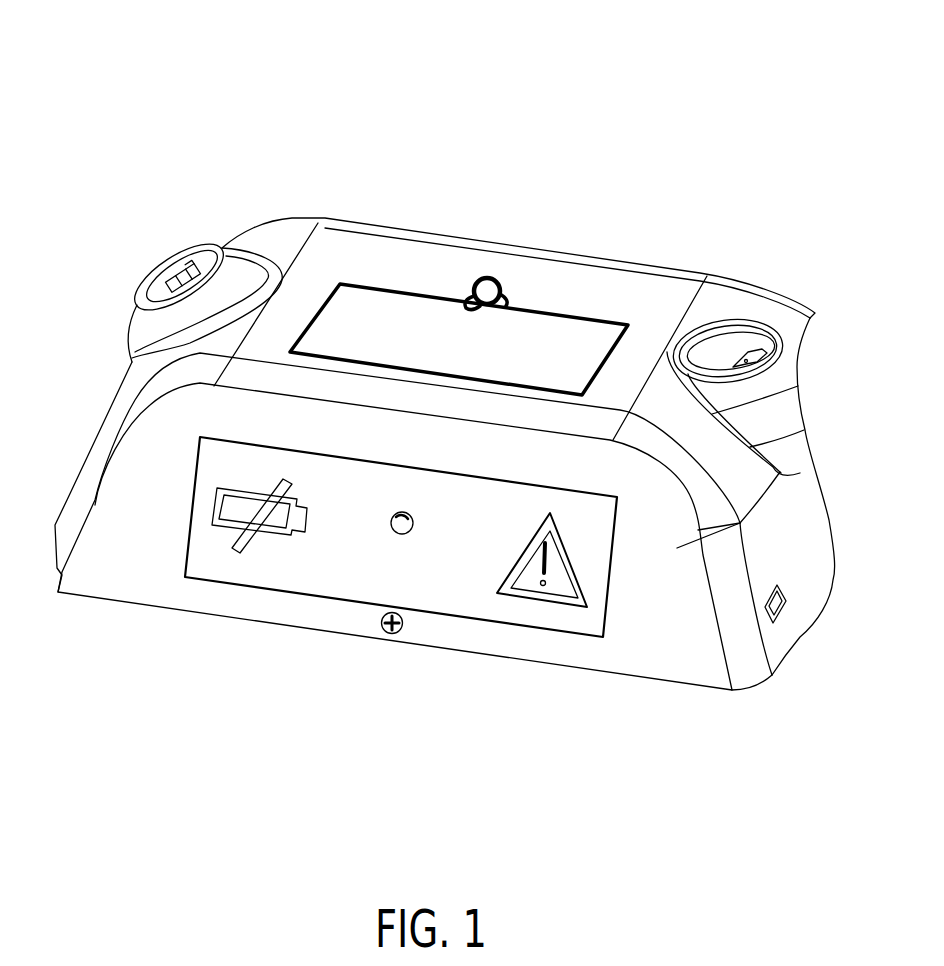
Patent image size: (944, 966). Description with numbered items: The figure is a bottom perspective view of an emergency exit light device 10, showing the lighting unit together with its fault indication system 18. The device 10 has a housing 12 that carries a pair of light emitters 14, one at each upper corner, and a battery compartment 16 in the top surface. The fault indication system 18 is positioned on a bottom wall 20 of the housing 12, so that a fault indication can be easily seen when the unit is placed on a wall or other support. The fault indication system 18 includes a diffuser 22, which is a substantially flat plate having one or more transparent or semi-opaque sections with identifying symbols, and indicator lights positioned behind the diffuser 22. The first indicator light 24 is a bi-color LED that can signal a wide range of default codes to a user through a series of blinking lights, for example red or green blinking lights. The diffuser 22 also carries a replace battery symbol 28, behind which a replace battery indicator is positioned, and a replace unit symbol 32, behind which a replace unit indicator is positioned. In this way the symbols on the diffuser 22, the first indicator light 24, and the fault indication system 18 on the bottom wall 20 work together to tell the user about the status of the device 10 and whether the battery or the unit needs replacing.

The emergency exit light device 10 is at (200, 86).
The housing 12 is at (786, 698).
The light emitters 14 is at (826, 362).
The battery compartment 16 is at (518, 305).
The fault indication system 18 is at (336, 622).
The bottom wall 20 is at (740, 523).
The diffuser 22 is at (207, 462).
The first indicator light 24 is at (403, 534).
The replace battery symbol 28 is at (243, 543).
The replace unit symbol 32 is at (563, 607).